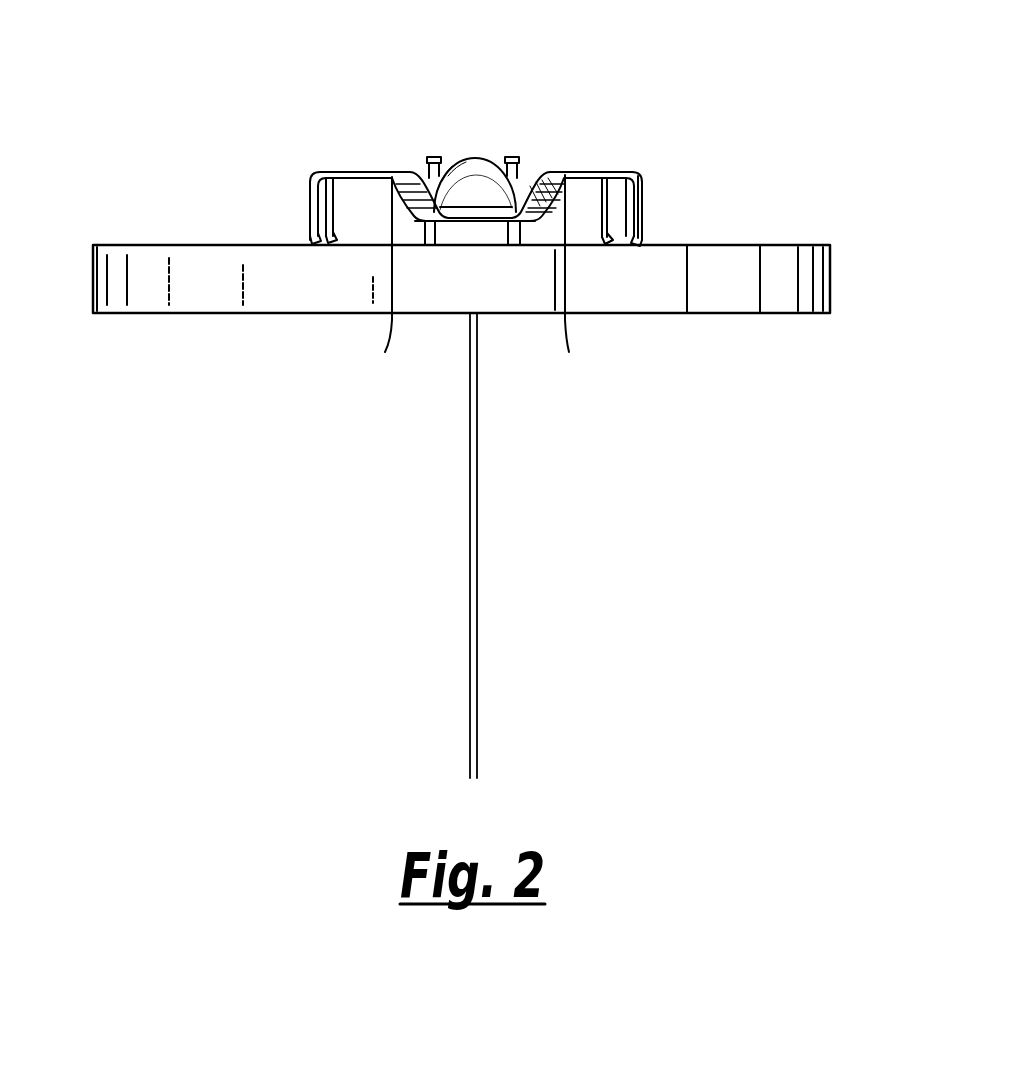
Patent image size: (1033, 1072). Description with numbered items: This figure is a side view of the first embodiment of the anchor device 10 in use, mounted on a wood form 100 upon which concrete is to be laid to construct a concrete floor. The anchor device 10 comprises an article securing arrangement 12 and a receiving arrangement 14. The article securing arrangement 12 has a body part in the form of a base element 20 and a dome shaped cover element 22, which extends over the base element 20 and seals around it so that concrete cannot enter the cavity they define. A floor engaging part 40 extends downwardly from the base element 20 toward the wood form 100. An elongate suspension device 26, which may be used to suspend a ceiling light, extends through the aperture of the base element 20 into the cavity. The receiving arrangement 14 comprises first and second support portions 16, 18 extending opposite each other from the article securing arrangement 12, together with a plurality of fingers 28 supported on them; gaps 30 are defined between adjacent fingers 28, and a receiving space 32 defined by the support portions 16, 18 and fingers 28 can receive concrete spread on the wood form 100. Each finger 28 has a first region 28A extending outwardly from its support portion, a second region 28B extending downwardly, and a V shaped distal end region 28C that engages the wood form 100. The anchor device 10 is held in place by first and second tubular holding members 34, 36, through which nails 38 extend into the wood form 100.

The anchor device 10 is at (352, 158).
The article securing arrangement 12 is at (488, 138).
The receiving arrangement 14 is at (592, 172).
The first support portion 16 is at (397, 170).
The second support portion 18 is at (587, 157).
The base element 20 is at (477, 222).
The dome shaped cover element 22 is at (464, 164).
The elongate suspension device 26 is at (494, 490).
The fingers 28 is at (298, 201).
The first region 28A is at (478, 284).
The second region 28B is at (348, 208).
The V shaped distal end region 28C is at (345, 233).
The gaps 30 is at (625, 243).
The receiving space 32 is at (585, 195).
The first tubular holding member 34 is at (450, 166).
The second tubular holding member 36 is at (551, 170).
The nails 38 is at (429, 158).
The floor engaging part 40 is at (441, 258).
The wood form 100 is at (178, 244).